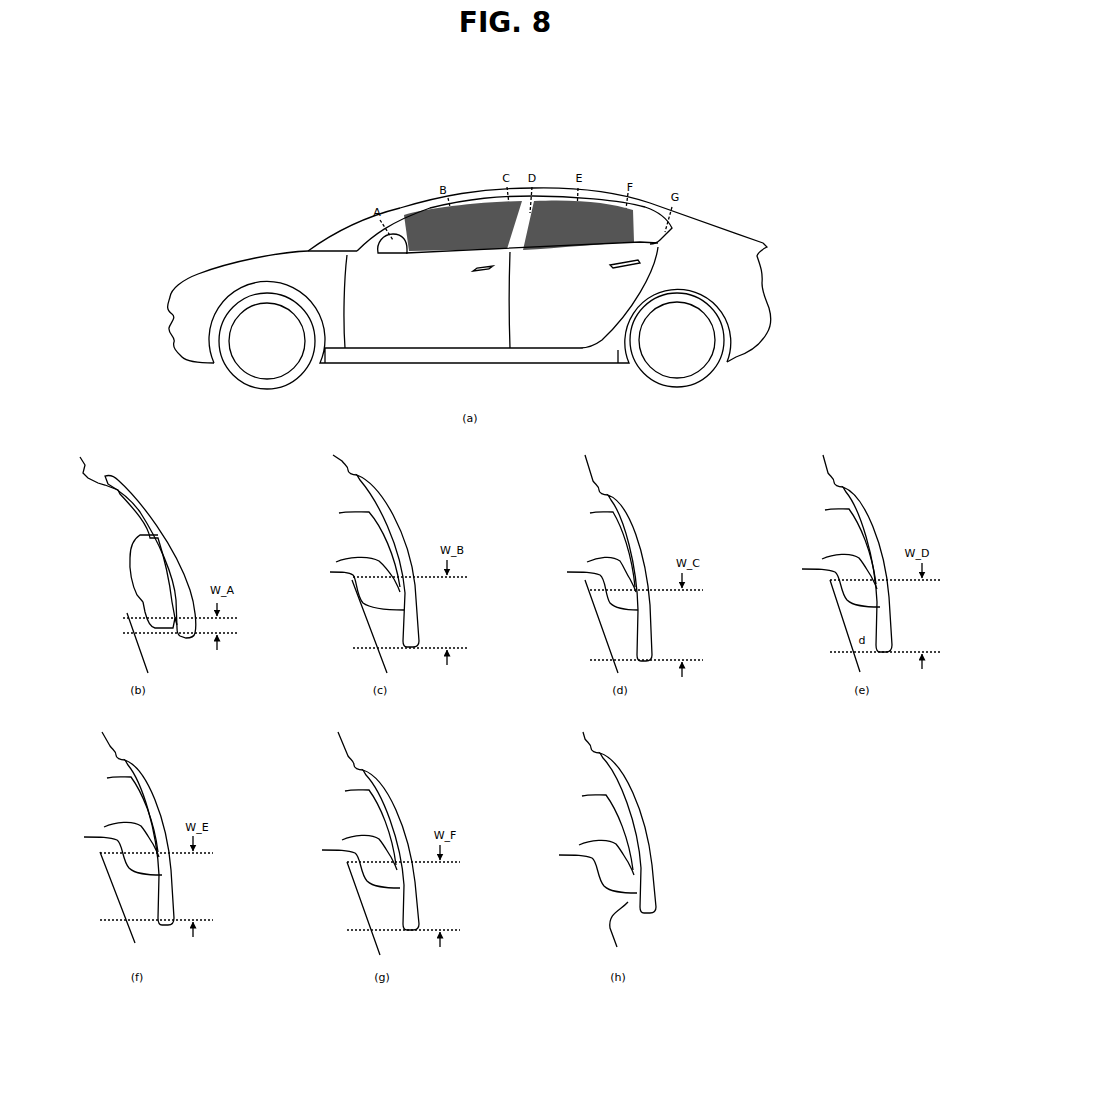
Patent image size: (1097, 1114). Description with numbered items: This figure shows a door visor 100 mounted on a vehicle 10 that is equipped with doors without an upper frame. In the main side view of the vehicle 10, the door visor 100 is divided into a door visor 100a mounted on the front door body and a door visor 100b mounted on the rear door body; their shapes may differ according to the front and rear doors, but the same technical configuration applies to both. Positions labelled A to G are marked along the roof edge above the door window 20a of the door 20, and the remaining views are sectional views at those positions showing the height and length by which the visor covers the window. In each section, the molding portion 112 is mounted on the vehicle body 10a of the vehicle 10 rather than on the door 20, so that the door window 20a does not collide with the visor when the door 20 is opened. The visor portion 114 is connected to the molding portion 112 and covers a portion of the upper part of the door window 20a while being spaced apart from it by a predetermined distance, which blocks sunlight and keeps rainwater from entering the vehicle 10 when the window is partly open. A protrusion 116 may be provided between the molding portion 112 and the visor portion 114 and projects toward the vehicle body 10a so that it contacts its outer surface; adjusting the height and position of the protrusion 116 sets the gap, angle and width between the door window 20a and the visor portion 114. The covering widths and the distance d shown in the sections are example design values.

The vehicle 10 is at (723, 218).
The vehicle body 10a is at (102, 492).
The door 20 is at (405, 325).
The door window 20a is at (468, 220).
The door visor 100 is at (502, 96).
The door visor mounted on a front door body 100a is at (510, 207).
The door visor mounted on a rear door body 100b is at (551, 205).
The molding portion 112 is at (130, 558).
The visor portion 114 is at (143, 611).
The protrusion 116 is at (336, 562).